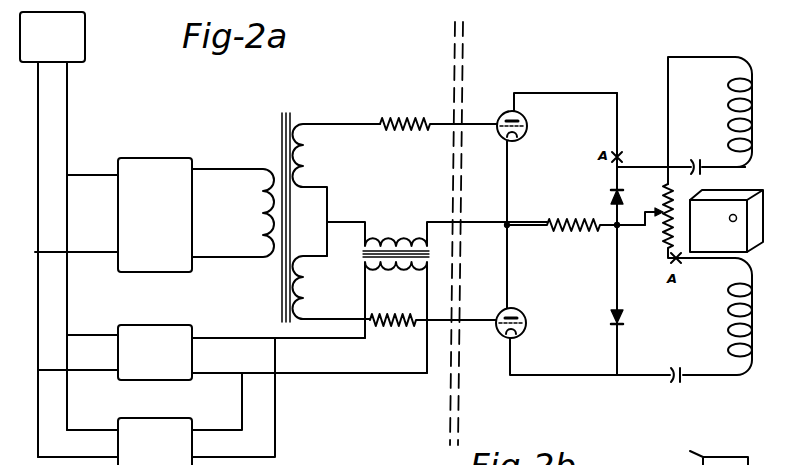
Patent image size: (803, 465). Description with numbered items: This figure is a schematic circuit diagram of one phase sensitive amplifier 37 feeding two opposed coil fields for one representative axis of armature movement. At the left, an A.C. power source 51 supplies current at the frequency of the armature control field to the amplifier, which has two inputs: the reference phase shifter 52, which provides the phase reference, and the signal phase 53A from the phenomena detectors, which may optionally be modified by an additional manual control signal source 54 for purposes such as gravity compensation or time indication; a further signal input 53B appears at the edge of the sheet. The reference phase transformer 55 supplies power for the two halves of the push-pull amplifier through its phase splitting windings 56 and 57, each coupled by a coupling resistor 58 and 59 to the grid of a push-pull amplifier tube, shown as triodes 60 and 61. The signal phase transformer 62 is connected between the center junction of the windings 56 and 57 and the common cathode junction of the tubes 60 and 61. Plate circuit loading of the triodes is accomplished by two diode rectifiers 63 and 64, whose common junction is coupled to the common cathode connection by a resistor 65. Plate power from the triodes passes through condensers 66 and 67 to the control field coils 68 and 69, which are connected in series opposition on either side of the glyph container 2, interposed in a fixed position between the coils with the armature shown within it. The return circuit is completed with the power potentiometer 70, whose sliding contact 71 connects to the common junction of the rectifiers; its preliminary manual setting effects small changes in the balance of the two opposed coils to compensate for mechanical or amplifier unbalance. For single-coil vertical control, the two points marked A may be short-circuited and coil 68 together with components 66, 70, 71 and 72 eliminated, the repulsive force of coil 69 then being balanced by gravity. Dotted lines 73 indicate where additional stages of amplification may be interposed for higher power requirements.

The glyph container 2 is at (732, 211).
The phase sensitive amplifier 37 is at (267, 217).
The A.C. power source 51 is at (80, 234).
The reference phase shifter 52 is at (113, 206).
The phenomena detector signal phase 53A is at (232, 381).
The signal input 53B is at (704, 452).
The manual control signal source 54 is at (115, 432).
The reference phase transformer 55 is at (233, 213).
The phase splitting winding 56 is at (337, 190).
The phase splitting winding 57 is at (332, 287).
The coupling resistor 58 is at (438, 135).
The coupling resistor 59 is at (433, 331).
The push-pull amplifier tube 60 is at (557, 159).
The push-pull amplifier tube 61 is at (583, 299).
The signal phase transformer 62 is at (437, 296).
The diode rectifier 63 is at (591, 234).
The diode rectifier 64 is at (594, 317).
The resistor 65 is at (576, 237).
The condenser 66 is at (681, 157).
The condenser 67 is at (685, 389).
The control field coil 68 is at (710, 110).
The control field coil 69 is at (721, 329).
The power potentiometer 70 is at (699, 222).
The sliding contact 71 is at (648, 210).
The circuit component 72 is at (682, 223).
The dotted lines 73 is at (469, 223).